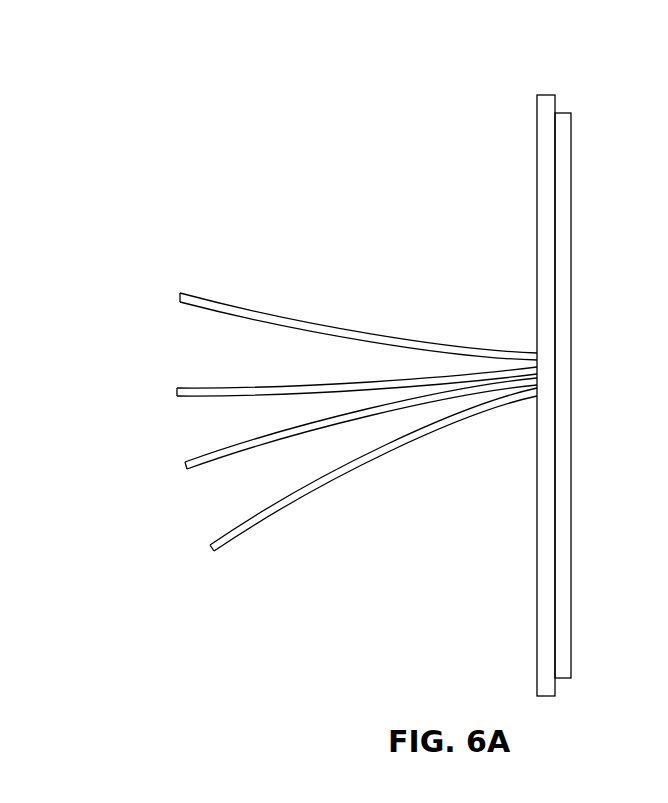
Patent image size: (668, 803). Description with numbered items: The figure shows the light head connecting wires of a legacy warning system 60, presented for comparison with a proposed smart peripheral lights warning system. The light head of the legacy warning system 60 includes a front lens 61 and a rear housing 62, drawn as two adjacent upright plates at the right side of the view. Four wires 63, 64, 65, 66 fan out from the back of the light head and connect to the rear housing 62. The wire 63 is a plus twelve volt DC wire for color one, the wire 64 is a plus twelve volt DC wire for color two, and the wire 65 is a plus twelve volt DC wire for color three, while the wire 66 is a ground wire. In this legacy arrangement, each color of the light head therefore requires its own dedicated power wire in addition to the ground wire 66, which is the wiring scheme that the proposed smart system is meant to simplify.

The legacy warning system 60 is at (197, 56).
The front lens 61 is at (561, 530).
The rear housing 62 is at (548, 548).
The wire 63 is at (203, 302).
The wire 64 is at (203, 388).
The wire 65 is at (205, 455).
The wire 66 is at (230, 528).